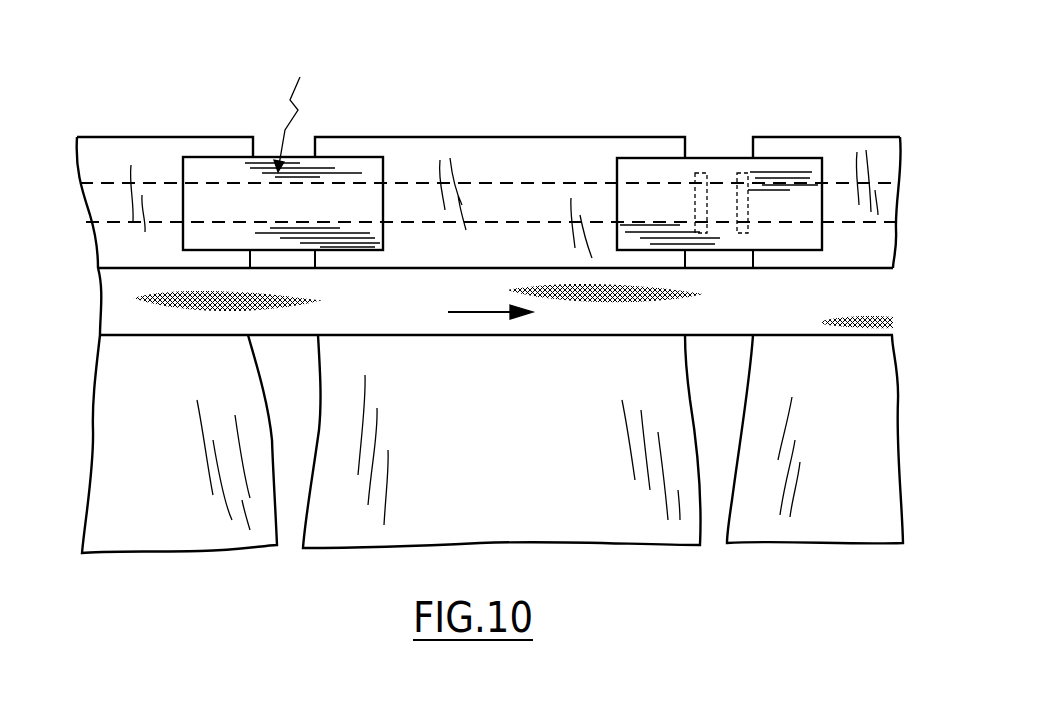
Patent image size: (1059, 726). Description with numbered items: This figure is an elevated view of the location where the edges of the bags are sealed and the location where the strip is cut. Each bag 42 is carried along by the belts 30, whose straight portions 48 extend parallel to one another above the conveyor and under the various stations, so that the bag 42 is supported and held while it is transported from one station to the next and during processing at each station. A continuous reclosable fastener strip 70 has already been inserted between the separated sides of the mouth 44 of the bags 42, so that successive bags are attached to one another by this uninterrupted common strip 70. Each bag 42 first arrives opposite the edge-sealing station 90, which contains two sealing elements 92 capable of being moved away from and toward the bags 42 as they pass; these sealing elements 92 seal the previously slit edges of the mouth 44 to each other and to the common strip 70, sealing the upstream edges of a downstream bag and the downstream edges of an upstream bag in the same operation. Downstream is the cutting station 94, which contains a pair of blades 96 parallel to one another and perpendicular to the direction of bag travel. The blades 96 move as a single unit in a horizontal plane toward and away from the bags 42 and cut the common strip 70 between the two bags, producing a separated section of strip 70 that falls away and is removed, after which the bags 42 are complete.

The belts 30 is at (177, 312).
The bag 42 is at (157, 518).
The mouth 44 is at (177, 137).
The straight portions 48 is at (287, 317).
The reclosable fastener strip 70 is at (107, 183).
The edge-sealing station 90 is at (301, 106).
The sealing elements 92 is at (362, 168).
The cutting station 94 is at (724, 138).
The blades 96 is at (697, 202).